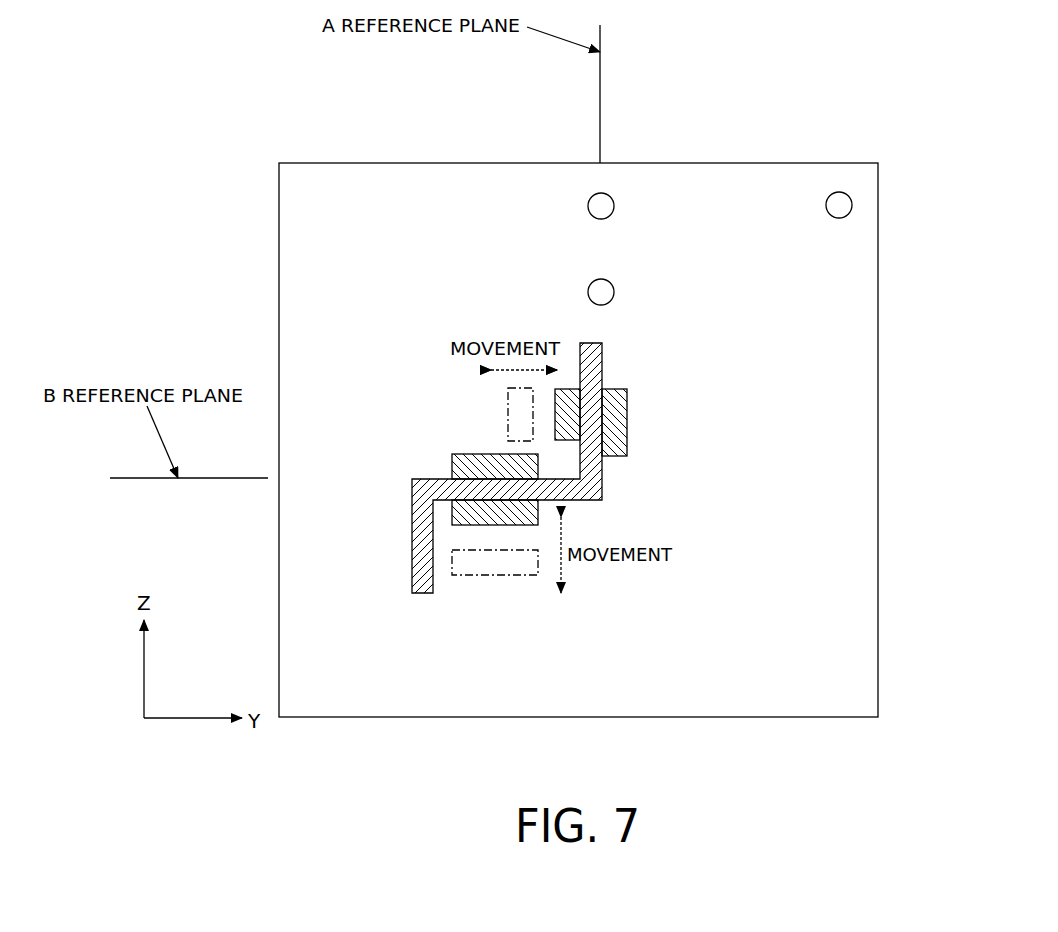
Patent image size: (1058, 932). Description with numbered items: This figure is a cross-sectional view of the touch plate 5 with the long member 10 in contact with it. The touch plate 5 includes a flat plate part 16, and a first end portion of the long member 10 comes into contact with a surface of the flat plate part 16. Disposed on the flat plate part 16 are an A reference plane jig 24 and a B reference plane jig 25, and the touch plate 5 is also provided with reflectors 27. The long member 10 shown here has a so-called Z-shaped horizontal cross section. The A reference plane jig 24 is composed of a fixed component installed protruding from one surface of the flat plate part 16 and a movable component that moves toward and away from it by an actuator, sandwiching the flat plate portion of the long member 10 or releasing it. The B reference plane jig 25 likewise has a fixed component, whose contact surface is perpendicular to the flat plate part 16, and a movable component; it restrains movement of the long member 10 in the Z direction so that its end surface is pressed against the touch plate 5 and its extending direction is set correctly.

The touch plate 5 is at (855, 110).
The long member 10 is at (412, 537).
The flat plate part 16 is at (862, 346).
The A reference plane jig 24 is at (567, 389).
The B reference plane jig 25 is at (452, 466).
The reflector 27 is at (607, 205).